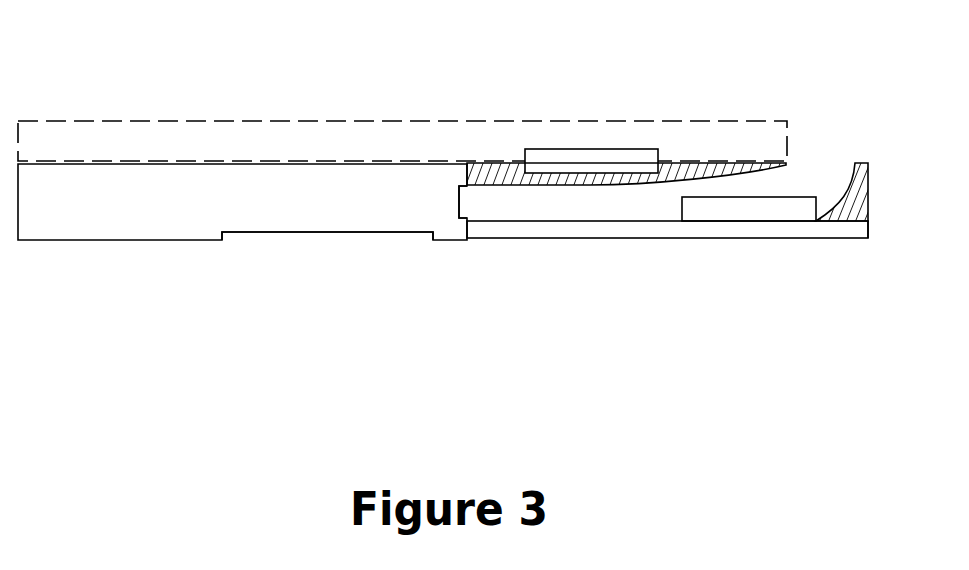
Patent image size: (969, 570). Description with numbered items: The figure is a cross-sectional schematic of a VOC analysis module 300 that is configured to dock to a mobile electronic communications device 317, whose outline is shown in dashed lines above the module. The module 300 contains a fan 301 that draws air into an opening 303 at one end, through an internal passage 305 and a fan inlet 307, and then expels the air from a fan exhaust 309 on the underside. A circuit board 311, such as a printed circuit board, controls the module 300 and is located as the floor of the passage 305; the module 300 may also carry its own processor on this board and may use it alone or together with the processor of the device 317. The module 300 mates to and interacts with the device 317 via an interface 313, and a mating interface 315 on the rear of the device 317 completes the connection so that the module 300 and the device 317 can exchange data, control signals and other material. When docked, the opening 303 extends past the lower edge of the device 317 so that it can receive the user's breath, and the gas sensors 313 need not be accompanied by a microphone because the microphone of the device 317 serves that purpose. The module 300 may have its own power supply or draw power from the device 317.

The VOC analysis module 300 is at (187, 297).
The fan 301 is at (261, 212).
The opening 303 is at (819, 146).
The internal passage 305 is at (625, 212).
The fan inlet 307 is at (461, 201).
The fan exhaust 309 is at (355, 233).
The circuit board 311 is at (869, 227).
The interface 313 is at (603, 167).
The mating interface 315 is at (542, 150).
The mobile electronic communications device 317 is at (173, 130).